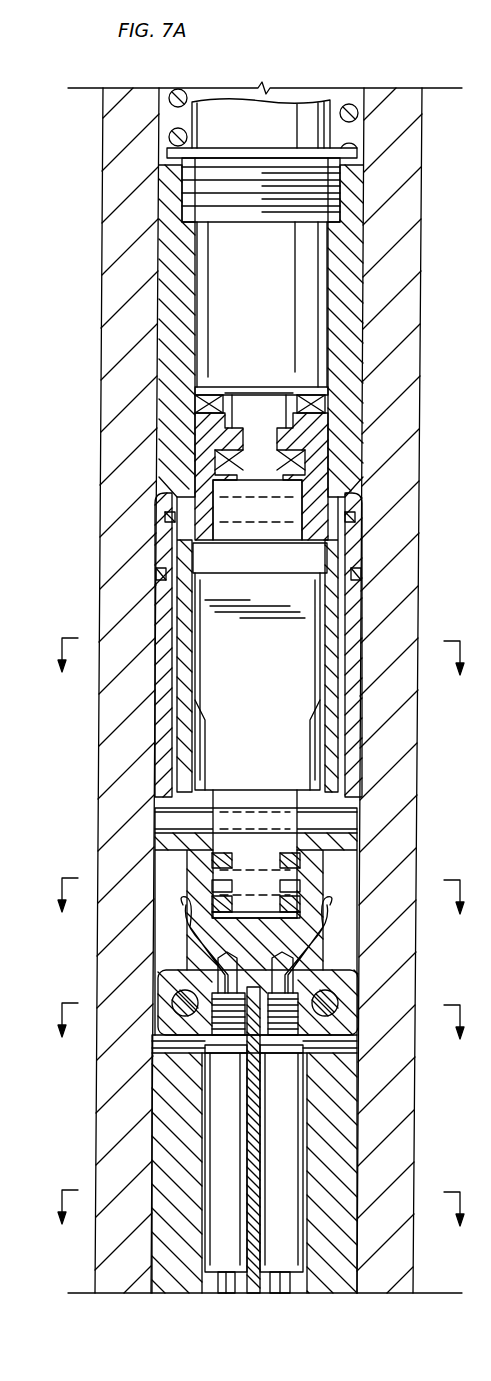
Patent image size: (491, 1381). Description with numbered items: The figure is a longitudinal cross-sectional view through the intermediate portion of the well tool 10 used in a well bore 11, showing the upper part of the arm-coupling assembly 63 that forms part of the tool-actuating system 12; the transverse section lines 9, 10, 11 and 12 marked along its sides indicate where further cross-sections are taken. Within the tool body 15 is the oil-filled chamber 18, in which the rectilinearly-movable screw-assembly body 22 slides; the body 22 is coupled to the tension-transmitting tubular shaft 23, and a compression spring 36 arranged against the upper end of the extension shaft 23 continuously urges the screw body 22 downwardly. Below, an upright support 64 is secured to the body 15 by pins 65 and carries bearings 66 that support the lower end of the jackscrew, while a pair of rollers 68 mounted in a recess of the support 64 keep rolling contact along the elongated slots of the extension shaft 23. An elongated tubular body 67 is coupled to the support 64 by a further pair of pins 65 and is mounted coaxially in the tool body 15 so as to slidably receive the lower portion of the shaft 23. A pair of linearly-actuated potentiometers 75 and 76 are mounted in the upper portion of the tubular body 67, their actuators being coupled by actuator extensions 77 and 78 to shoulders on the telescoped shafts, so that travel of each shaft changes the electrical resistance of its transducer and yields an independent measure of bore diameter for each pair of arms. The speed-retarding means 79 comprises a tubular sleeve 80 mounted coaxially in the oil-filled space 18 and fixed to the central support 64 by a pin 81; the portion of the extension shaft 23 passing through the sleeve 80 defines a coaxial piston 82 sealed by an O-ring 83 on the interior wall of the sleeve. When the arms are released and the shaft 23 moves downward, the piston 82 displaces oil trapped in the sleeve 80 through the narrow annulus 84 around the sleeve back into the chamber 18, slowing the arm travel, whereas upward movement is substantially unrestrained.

The tool body 15 is at (400, 424).
The oil-filled chamber 18 is at (160, 112).
The screw-assembly body 22 is at (305, 118).
The tubular shaft 23 is at (345, 305).
The compression spring 36 is at (360, 114).
The arm-coupling assembly 63 is at (80, 797).
The upright support 64 is at (345, 863).
The pins 65 is at (335, 1010).
The bearings 66 is at (213, 460).
The tubular body 67 is at (340, 1160).
The rollers 68 is at (225, 872).
The potentiometer 75 is at (290, 1115).
The potentiometer 76 is at (215, 1110).
The actuator extension 77 is at (280, 1286).
The actuator extension 78 is at (222, 1284).
The speed-retarding means 79 is at (386, 609).
The sleeve 80 is at (158, 745).
The pin 81 is at (345, 822).
The piston 82 is at (205, 600).
The O-ring 83 is at (165, 517).
The narrow annulus 84 is at (355, 361).
The section line 9- 9 is at (258, 666).
The well tool 10 is at (258, 906).
The well bore 11 is at (258, 1032).
The tool-actuating system 12 is at (258, 1218).